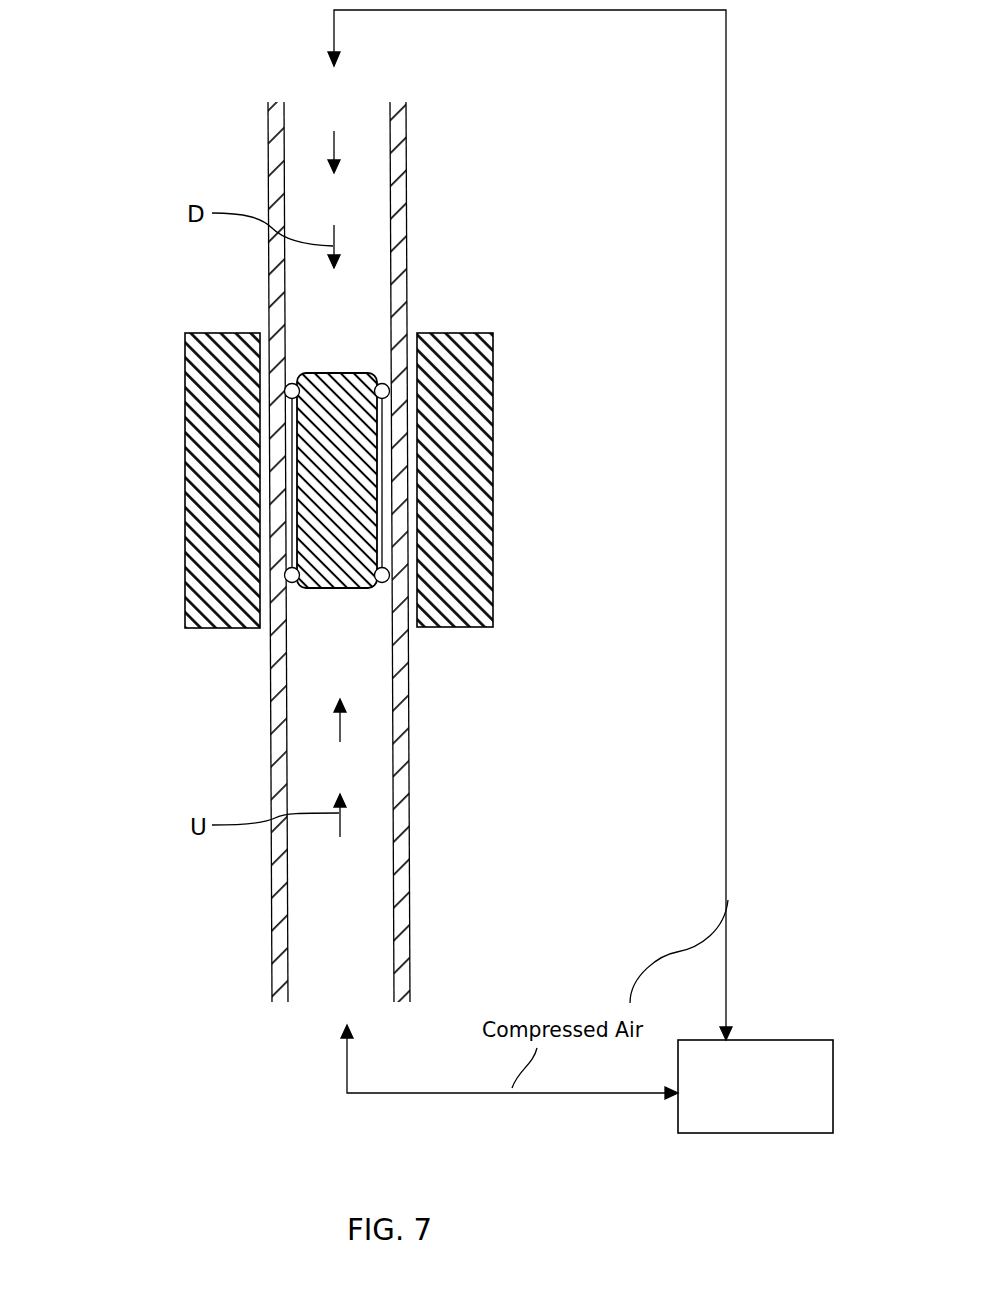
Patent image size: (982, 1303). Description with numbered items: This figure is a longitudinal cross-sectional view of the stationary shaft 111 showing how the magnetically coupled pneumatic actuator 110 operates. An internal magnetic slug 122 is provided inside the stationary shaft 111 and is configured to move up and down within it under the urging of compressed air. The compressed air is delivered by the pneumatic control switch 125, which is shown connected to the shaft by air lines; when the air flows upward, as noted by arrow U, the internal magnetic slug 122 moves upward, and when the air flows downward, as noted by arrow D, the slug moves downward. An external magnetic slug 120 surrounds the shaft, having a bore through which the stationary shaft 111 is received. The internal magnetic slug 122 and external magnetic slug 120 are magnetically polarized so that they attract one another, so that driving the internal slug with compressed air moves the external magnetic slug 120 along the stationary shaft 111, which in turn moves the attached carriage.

The magnetically coupled pneumatic actuator 110 is at (443, 714).
The stationary shaft 111 is at (402, 778).
The external magnetic slug 120 is at (462, 399).
The internal magnetic slug 122 is at (315, 497).
The pneumatic control switch 125 is at (782, 1099).